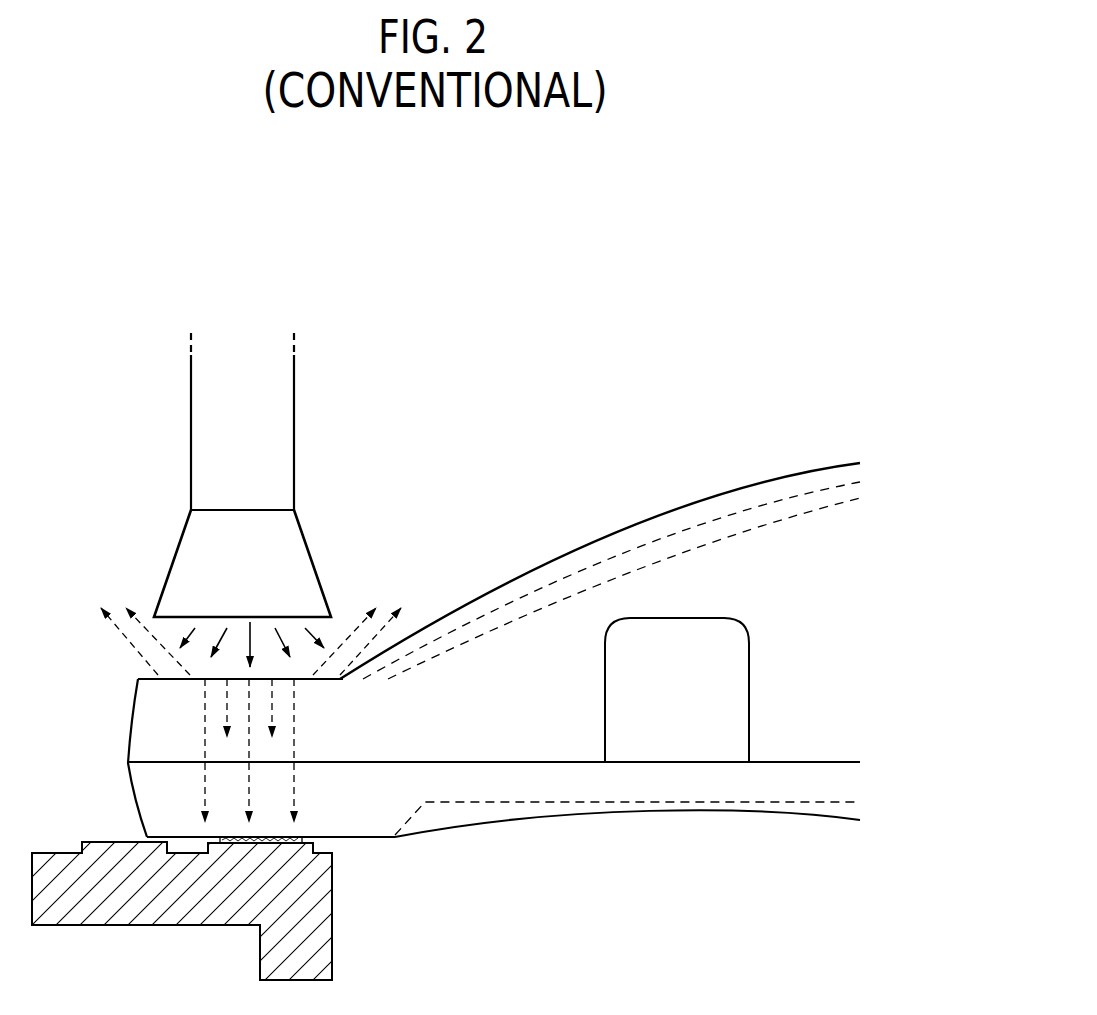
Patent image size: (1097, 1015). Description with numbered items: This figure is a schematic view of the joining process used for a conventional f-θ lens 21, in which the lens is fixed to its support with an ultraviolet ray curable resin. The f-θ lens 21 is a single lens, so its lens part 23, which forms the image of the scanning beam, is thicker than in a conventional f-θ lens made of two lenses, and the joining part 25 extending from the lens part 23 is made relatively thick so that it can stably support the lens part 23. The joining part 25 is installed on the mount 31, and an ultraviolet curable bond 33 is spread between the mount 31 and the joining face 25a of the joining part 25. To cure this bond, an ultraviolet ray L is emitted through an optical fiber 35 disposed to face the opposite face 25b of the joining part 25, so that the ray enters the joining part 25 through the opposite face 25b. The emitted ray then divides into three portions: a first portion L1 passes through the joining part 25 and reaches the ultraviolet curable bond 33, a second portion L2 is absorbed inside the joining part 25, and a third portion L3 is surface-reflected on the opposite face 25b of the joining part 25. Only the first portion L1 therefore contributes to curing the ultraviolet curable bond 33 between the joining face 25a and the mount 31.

The f-θ lens 21 is at (676, 480).
The lens part 23 is at (530, 566).
The joining part 25 is at (140, 738).
The joining face 25a is at (165, 846).
The opposite face 25b is at (137, 678).
The mount 31 is at (333, 905).
The ultraviolet curable bond 33 is at (288, 843).
The optical fiber 35 is at (293, 417).
The ultraviolet ray L is at (243, 645).
The first portion of the emitted ultraviolet ray L1 is at (294, 777).
The second portion of the emitted ultraviolet ray L2 is at (272, 720).
The third portion of the emitted ultraviolet ray L3 is at (343, 640).